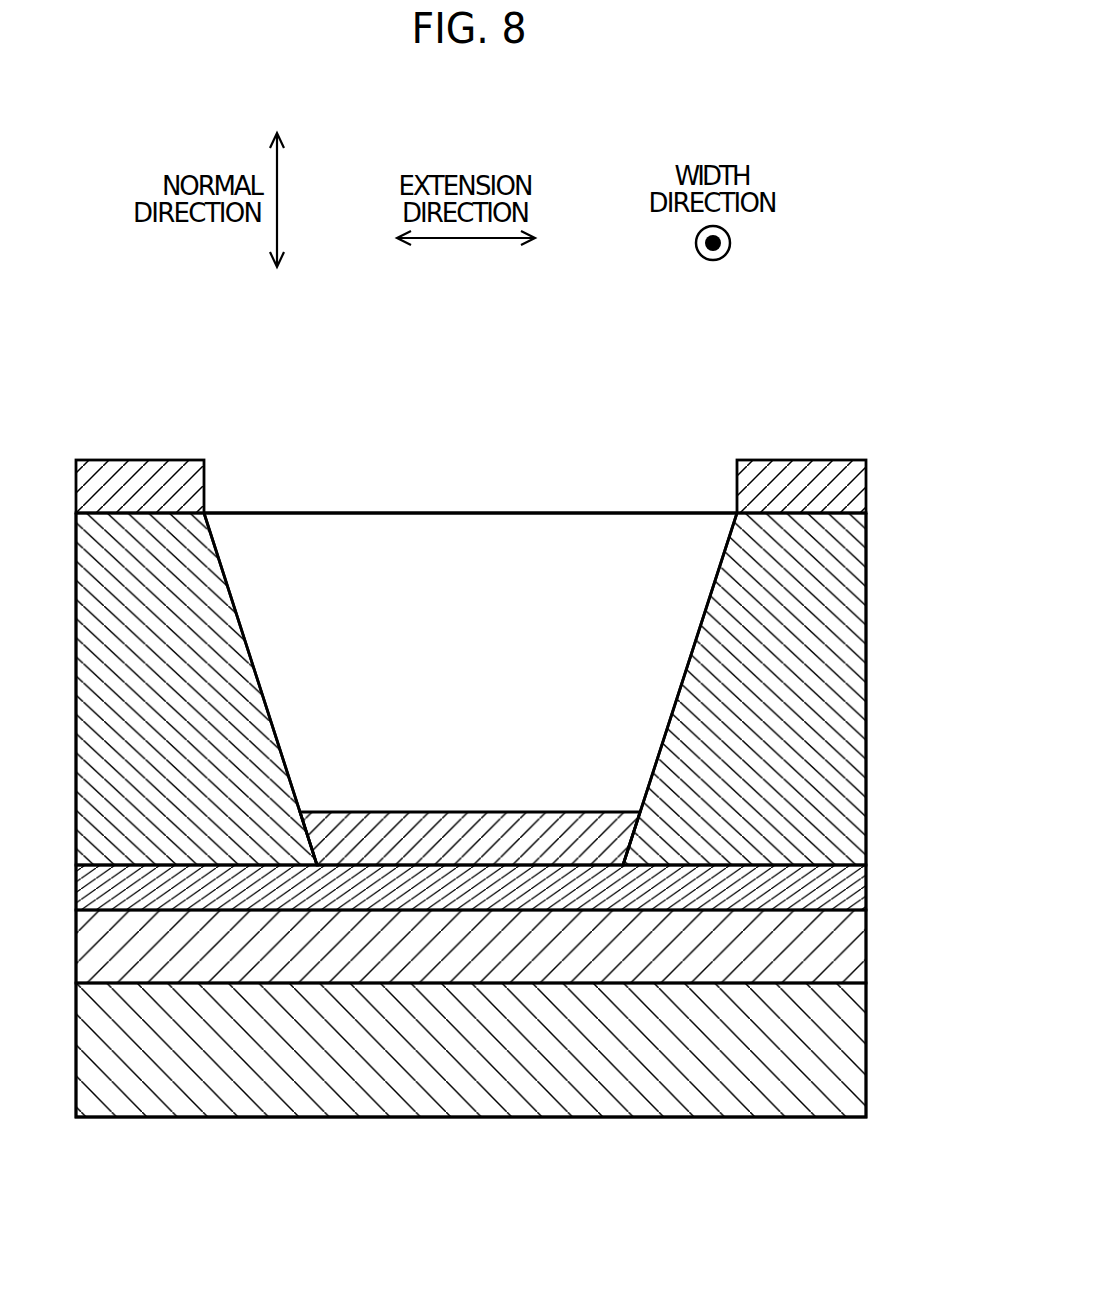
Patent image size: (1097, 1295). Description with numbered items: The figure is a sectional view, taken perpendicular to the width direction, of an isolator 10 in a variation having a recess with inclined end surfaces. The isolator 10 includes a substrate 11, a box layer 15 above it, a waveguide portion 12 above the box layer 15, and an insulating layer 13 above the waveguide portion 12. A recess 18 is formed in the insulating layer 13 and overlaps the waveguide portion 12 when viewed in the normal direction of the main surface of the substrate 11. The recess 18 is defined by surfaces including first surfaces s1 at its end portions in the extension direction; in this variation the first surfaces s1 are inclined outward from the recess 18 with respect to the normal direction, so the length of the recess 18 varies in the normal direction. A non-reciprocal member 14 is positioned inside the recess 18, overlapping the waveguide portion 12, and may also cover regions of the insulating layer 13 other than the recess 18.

The isolator 10 is at (488, 1232).
The substrate 11 is at (825, 1048).
The waveguide portions 12 is at (825, 885).
The insulating layer 13 is at (827, 709).
The non-reciprocal member 14 is at (138, 488).
The box layer 15 is at (830, 950).
The recess 18 is at (482, 621).
The first surfaces s1 is at (255, 667).